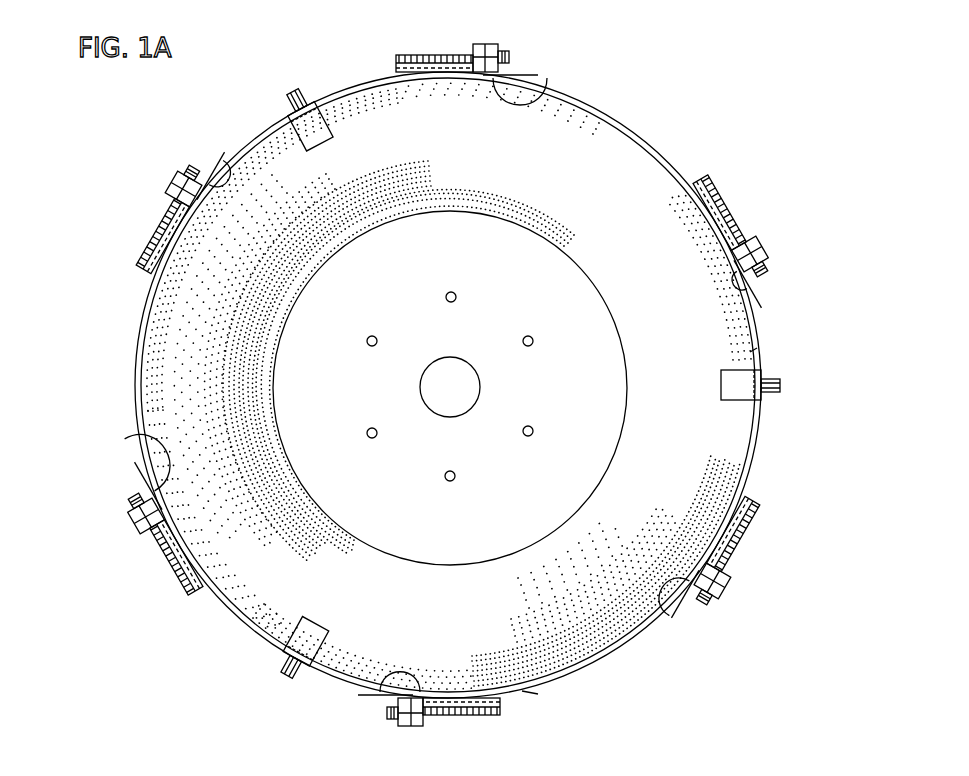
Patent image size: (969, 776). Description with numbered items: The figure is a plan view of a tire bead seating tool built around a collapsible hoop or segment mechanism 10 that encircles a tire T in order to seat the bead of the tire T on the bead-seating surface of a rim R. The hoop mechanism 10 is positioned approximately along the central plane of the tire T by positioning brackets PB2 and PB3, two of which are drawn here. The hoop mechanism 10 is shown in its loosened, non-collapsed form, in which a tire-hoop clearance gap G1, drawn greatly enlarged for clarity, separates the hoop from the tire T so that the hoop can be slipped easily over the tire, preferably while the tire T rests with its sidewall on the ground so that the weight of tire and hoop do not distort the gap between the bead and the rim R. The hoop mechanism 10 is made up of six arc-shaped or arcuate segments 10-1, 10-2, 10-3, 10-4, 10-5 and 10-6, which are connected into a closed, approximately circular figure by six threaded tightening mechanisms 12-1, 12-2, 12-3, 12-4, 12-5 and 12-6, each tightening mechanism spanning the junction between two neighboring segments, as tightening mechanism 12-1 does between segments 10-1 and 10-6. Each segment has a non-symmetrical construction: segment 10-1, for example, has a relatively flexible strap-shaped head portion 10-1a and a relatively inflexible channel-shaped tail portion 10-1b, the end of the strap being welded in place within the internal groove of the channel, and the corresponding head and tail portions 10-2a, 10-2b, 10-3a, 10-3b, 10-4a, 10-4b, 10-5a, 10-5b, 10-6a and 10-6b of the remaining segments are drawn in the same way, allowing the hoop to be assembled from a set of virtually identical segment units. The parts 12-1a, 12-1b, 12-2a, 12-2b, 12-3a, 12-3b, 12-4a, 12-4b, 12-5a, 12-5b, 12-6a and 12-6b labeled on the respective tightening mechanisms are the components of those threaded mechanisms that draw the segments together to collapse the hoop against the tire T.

The collapsible hoop or segment mechanism 10 is at (72, 345).
The rim R is at (628, 431).
The tire T is at (754, 350).
The tire-hoop clearance gap G1 is at (530, 693).
The positioning bracket PB2 is at (768, 396).
The positioning bracket PB3 is at (292, 98).
The threaded tightening mechanism 12-1 is at (483, 38).
The sensor module plate 12-1a is at (441, 57).
The sensor module connector 12-1b is at (508, 57).
The threaded tightening mechanism 12-2 is at (770, 215).
The sensor module plate 12-2a is at (722, 188).
The sensor module connector 12-2b is at (770, 258).
The threaded tightening mechanism 12-3 is at (764, 573).
The sensor module plate 12-3a is at (752, 522).
The sensor module connector 12-3b is at (708, 600).
The threaded tightening mechanism 12-4 is at (465, 737).
The sensor module plate 12-4a is at (465, 718).
The sensor module connector 12-4b is at (393, 727).
The threaded tightening mechanism 12-5 is at (125, 559).
The sensor module plate 12-5a is at (172, 568).
The sensor module connector 12-5b is at (137, 505).
The threaded tightening mechanism 12-6 is at (127, 215).
The sensor module plate 12-6a is at (163, 240).
The sensor module connector 12-6b is at (178, 182).
The arcuate segment 10-1 is at (621, 95).
The strap-shaped head portion 10-1a is at (638, 128).
The channel-shaped tail portion 10-1b is at (550, 88).
The arcuate segment 10-2 is at (811, 297).
The sensor rim element 10-2a is at (755, 300).
The sensor housing 10-2b is at (745, 283).
The arcuate segment 10-3 is at (720, 648).
The sensor rim element 10-3a is at (613, 660).
The sensor housing 10-3b is at (640, 640).
The arcuate segment 10-4 is at (306, 722).
The sensor rim element 10-4a is at (347, 688).
The sensor housing 10-4b is at (380, 690).
The arcuate segment 10-5 is at (93, 465).
The sensor rim element 10-5a is at (143, 469).
The sensor housing 10-5b is at (158, 442).
The arcuate segment 10-6 is at (172, 145).
The sensor rim element 10-6a is at (258, 140).
The sensor housing 10-6b is at (225, 190).